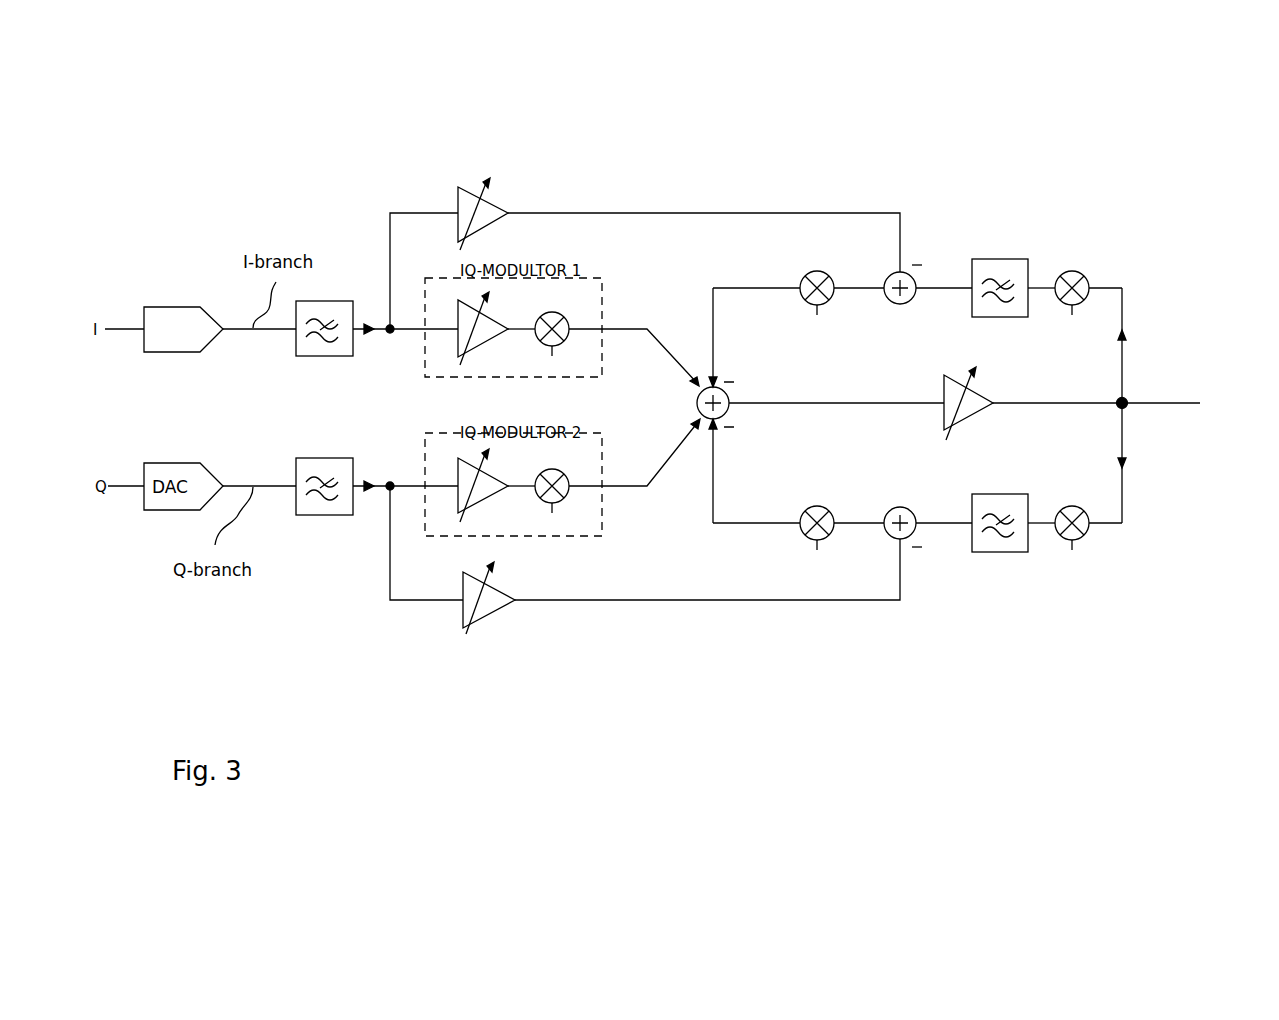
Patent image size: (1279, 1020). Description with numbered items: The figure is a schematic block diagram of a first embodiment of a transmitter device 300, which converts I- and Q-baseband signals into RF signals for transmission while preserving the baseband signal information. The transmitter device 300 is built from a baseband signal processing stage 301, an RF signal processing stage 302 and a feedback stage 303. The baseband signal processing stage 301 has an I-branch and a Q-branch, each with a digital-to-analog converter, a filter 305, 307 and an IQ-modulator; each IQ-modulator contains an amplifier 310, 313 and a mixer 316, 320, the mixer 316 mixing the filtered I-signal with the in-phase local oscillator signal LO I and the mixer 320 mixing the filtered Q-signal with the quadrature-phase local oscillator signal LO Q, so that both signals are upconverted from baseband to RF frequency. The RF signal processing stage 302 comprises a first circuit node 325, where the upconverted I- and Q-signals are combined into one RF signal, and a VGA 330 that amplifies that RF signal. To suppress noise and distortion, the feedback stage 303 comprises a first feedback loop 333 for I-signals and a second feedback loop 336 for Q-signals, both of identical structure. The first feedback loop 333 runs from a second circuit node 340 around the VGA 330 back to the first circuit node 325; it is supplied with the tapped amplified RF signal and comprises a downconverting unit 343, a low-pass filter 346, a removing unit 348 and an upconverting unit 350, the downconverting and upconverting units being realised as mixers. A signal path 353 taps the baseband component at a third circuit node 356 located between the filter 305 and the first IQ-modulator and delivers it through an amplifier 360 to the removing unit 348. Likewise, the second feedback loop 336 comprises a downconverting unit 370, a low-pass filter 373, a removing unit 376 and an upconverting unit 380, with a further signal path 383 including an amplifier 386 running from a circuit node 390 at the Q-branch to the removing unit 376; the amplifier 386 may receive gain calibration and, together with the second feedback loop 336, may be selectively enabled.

The transmitter device 300 is at (222, 201).
The baseband signal processing stage 301 is at (247, 403).
The RF signal processing stage 302 is at (885, 400).
The feedback stage 303 is at (952, 228).
The filter 305 is at (318, 346).
The filter 307 is at (338, 470).
The amplifier 310 is at (485, 333).
The amplifier 313 is at (486, 489).
The mixer 316 is at (567, 332).
The mixer 320 is at (567, 489).
The first circuit node 325 is at (700, 410).
The VGA 330 is at (975, 418).
The first feedback loop 333 is at (1126, 385).
The second feedback loop 336 is at (1126, 420).
The second circuit node 340 is at (1118, 400).
The downconverting unit 343 is at (1086, 275).
The low-pass filter 346 is at (1020, 272).
The removing unit 348 is at (889, 276).
The upconverting unit 350 is at (806, 276).
The signal path 353 is at (704, 231).
The third circuit node 356 is at (395, 335).
The amplifier 360 is at (510, 212).
The downconverting unit 370 is at (1080, 528).
The low-pass filter 373 is at (1000, 540).
The removing unit 376 is at (897, 506).
The upconverting unit 380 is at (810, 506).
The further signal path 383 is at (707, 582).
The amplifier 386 is at (480, 615).
The circuit node 390 is at (387, 492).